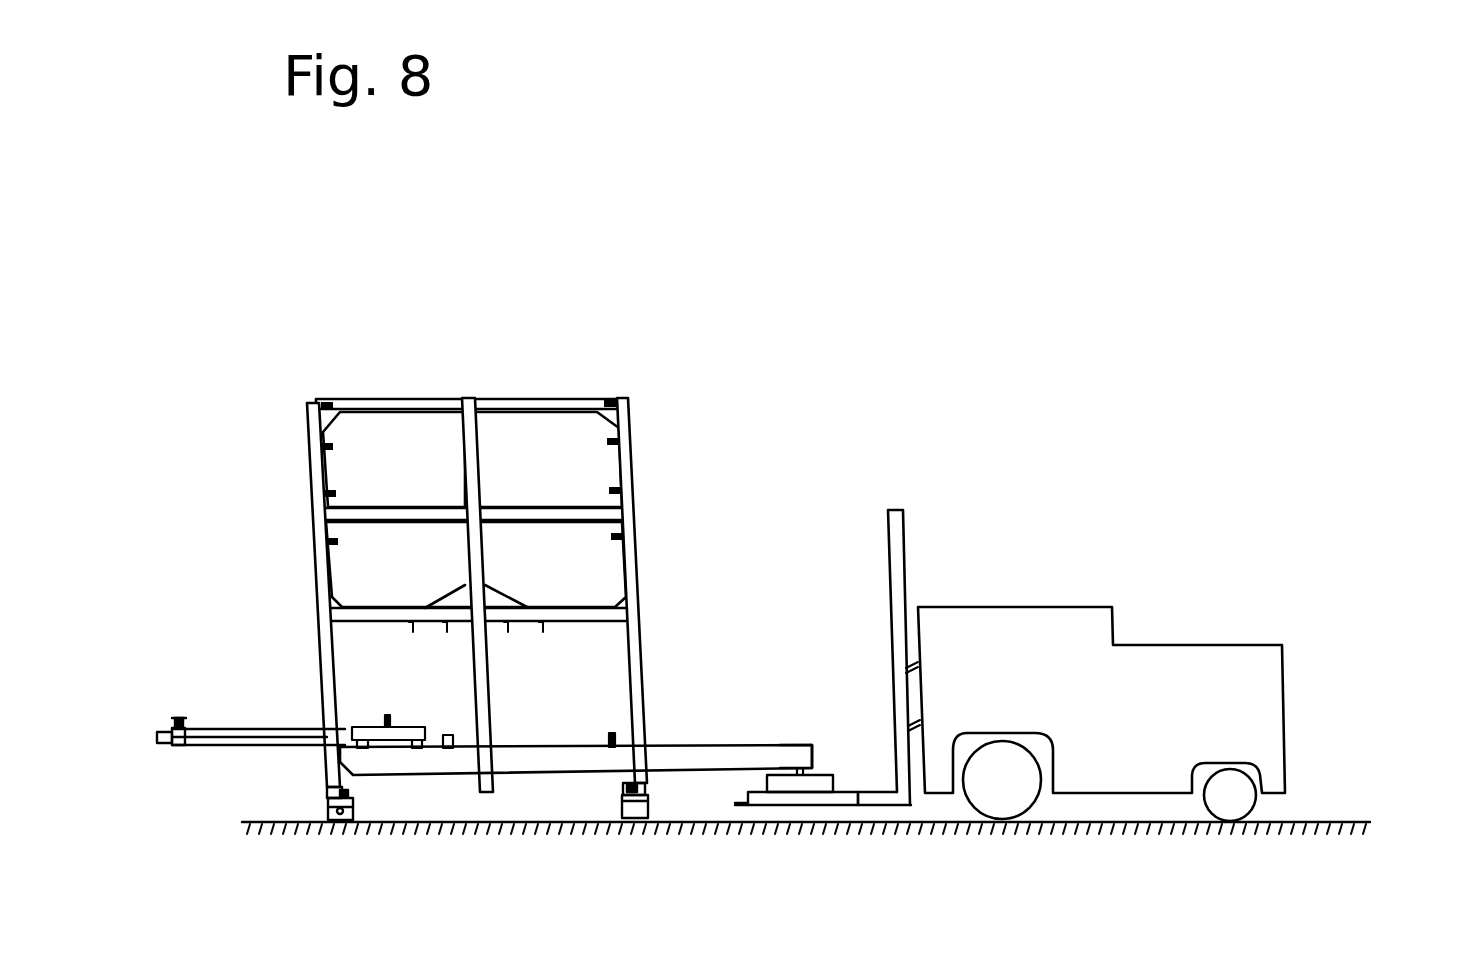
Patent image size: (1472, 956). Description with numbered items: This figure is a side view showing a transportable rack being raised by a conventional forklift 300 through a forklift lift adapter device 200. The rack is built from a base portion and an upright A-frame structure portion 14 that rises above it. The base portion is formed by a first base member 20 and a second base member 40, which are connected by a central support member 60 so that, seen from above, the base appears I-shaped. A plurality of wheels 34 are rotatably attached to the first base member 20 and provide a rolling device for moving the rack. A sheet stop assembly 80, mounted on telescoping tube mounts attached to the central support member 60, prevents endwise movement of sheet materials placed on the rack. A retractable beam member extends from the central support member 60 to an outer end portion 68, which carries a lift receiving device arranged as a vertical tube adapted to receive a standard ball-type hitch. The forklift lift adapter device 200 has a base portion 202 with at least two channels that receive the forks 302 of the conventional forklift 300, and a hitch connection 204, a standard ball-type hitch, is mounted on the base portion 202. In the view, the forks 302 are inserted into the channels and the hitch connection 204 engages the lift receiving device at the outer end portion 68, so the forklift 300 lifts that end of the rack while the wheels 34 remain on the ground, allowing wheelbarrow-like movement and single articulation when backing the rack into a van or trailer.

The A-frame structure portion 14 is at (297, 548).
The first base member 20 is at (330, 808).
The wheels 34 is at (330, 822).
The second base member 40 is at (632, 805).
The central support member 60 is at (530, 760).
The outer end portion 68 is at (792, 745).
The sheet stop assembly 80 is at (237, 722).
The forklift lift adapter device 200 is at (772, 812).
The base portion 202 is at (803, 785).
The hitch connection 204 is at (805, 770).
The conventional forklift 300 is at (1300, 712).
The forks 302 is at (873, 800).